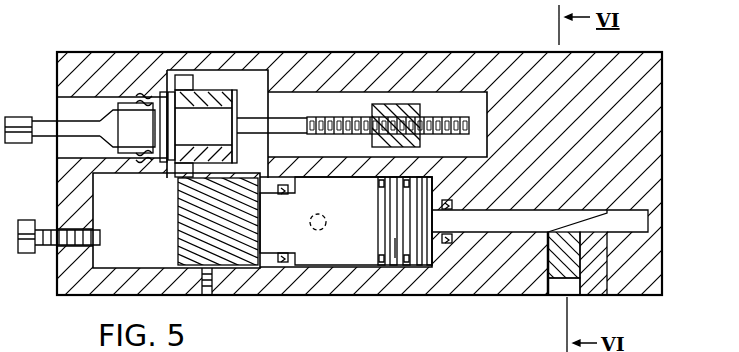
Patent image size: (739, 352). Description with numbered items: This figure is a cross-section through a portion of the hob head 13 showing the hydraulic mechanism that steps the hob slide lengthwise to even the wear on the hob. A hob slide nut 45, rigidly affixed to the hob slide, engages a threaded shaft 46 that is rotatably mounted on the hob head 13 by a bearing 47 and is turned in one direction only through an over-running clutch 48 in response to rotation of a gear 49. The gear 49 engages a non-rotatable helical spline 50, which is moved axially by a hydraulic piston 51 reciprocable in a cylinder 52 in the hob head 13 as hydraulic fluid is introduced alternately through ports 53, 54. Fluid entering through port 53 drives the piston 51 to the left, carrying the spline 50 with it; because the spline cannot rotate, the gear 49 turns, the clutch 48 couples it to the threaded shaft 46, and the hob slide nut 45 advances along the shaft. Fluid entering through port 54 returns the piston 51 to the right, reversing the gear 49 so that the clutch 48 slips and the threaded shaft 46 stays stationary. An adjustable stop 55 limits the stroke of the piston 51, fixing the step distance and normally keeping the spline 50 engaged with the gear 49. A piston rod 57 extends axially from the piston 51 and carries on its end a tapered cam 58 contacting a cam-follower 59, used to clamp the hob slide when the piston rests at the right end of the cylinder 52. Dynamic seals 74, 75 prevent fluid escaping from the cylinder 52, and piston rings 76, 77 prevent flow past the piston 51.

The hob head 13 is at (270, 68).
The hob slide nut 45 is at (400, 105).
The threaded shaft 46 is at (463, 117).
The bearing 47 is at (147, 95).
The gear 49 is at (152, 95).
The over-running clutch 48 is at (198, 95).
The helical spline 50 is at (177, 235).
The hydraulic piston 51 is at (400, 248).
The cylinder 52 is at (341, 197).
The port 53 is at (438, 240).
The port 54 is at (312, 232).
The adjustable stop 55 is at (107, 237).
The piston rod 57 is at (503, 232).
The tapered cam 58 is at (600, 213).
The cam-follower 59 is at (563, 270).
The dynamic seal 74 is at (283, 258).
The dynamic seal 75 is at (453, 237).
The piston ring 76 is at (387, 270).
The piston ring 77 is at (408, 267).